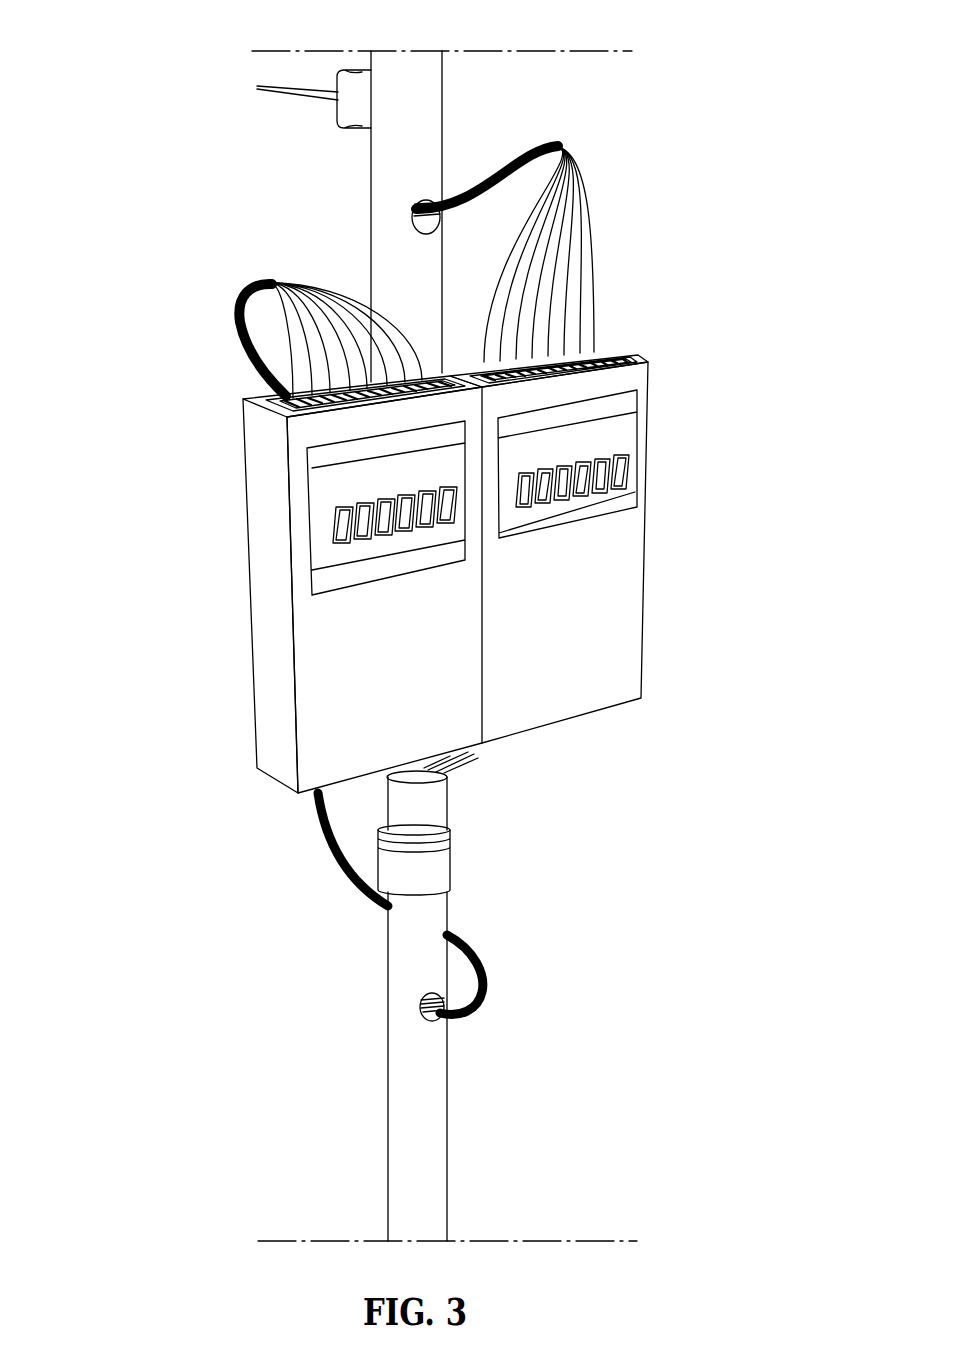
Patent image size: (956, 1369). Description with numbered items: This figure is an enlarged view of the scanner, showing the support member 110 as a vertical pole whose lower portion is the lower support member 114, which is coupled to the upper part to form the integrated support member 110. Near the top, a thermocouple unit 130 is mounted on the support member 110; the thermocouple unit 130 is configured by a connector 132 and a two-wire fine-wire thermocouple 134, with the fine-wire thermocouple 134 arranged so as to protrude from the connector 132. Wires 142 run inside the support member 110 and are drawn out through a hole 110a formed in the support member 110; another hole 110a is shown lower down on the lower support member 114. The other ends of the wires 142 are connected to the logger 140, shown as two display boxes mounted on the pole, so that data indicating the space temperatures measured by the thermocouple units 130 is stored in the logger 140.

The support member 110 is at (433, 82).
The hole 110a is at (432, 203).
The lower support member 114 is at (392, 982).
The thermocouple unit 130 is at (283, 133).
The connector 132 is at (341, 128).
The fine-wire thermocouple 134 is at (287, 93).
The logger 140 is at (262, 705).
The wires 142 is at (592, 280).